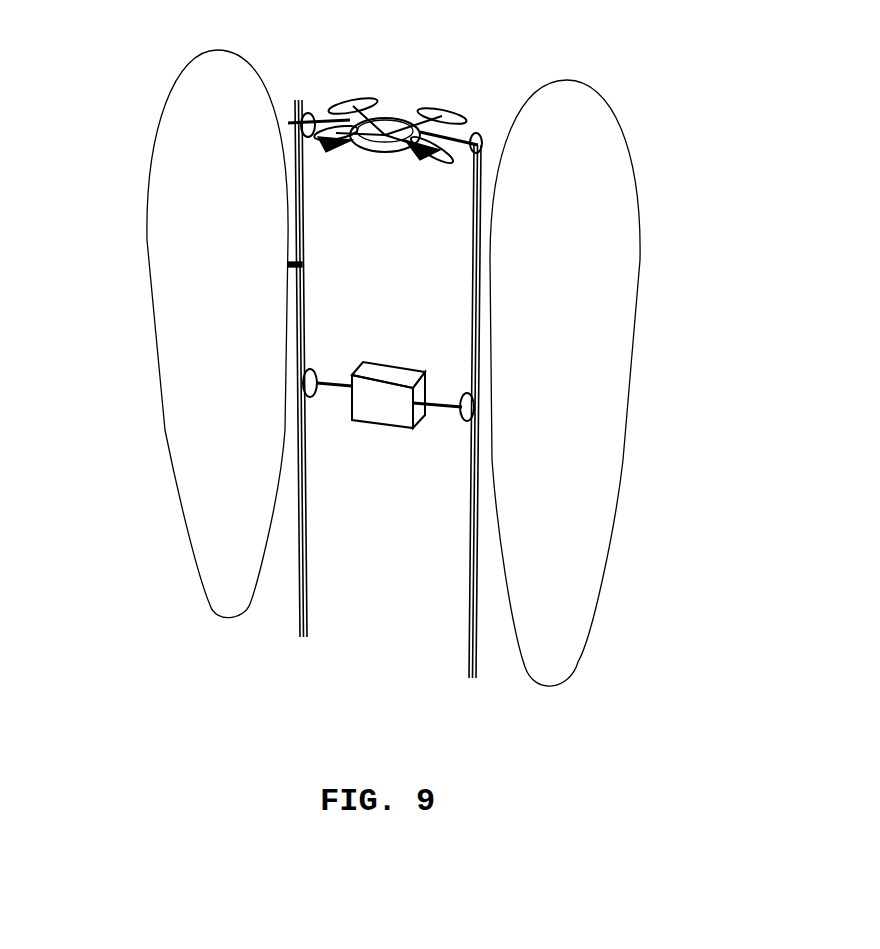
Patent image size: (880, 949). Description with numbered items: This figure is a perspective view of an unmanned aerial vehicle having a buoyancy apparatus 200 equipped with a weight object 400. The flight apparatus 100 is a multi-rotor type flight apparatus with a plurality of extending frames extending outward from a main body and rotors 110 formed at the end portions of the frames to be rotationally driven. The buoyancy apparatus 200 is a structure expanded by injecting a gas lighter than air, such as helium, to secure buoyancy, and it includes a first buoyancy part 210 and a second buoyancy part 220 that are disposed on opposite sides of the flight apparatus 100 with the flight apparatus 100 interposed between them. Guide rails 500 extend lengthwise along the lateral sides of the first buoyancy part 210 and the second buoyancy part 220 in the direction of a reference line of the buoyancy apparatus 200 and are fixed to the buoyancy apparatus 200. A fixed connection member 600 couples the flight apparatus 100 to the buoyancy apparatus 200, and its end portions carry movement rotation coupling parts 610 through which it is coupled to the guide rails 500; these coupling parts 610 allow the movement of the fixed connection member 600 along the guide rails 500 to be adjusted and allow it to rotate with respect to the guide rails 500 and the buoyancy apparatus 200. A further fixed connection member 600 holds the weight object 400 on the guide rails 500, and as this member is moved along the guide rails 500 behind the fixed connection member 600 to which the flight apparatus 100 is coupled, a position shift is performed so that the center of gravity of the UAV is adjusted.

The flight apparatus 100 is at (390, 119).
The rotors 110 is at (340, 152).
The buoyancy apparatus 200 is at (411, 368).
The first buoyancy part 210 is at (172, 343).
The second buoyancy part 220 is at (628, 335).
The weight object 400 is at (383, 410).
The guide rails 500 is at (302, 265).
The fixed connection member 600 is at (470, 152).
The movement rotation coupling parts 610 is at (312, 104).